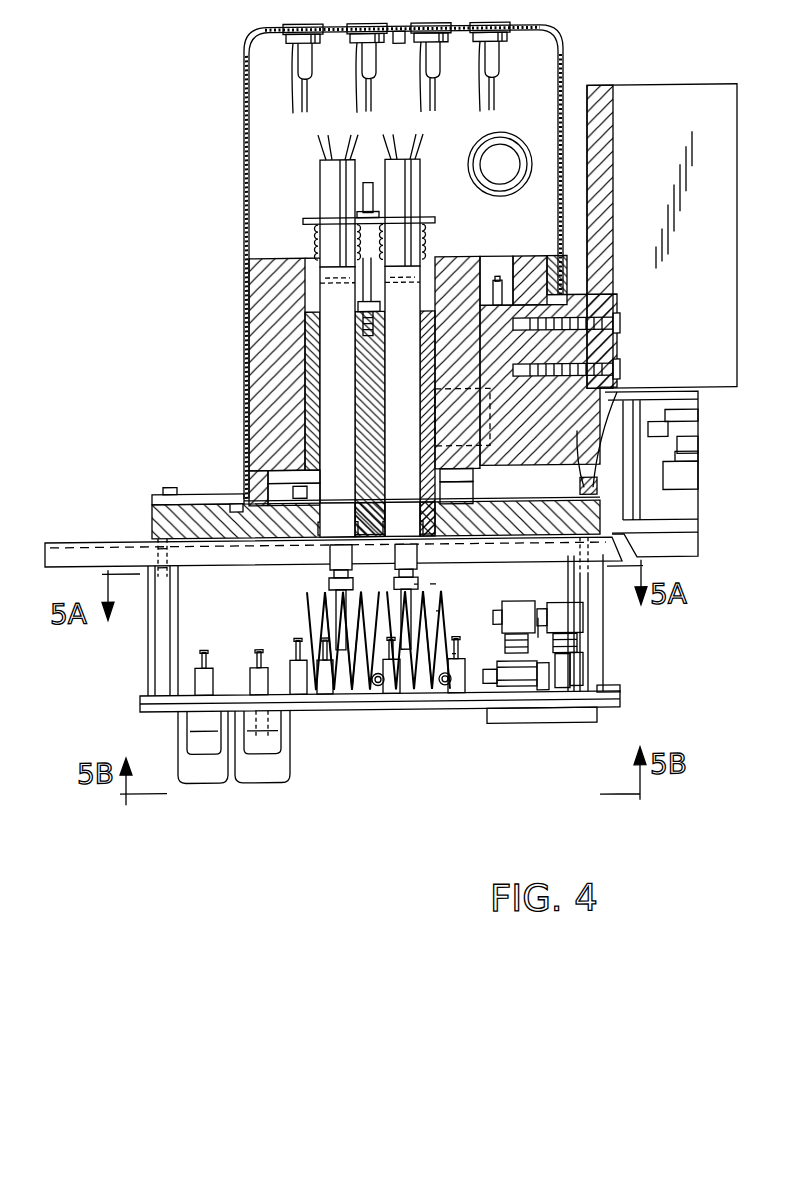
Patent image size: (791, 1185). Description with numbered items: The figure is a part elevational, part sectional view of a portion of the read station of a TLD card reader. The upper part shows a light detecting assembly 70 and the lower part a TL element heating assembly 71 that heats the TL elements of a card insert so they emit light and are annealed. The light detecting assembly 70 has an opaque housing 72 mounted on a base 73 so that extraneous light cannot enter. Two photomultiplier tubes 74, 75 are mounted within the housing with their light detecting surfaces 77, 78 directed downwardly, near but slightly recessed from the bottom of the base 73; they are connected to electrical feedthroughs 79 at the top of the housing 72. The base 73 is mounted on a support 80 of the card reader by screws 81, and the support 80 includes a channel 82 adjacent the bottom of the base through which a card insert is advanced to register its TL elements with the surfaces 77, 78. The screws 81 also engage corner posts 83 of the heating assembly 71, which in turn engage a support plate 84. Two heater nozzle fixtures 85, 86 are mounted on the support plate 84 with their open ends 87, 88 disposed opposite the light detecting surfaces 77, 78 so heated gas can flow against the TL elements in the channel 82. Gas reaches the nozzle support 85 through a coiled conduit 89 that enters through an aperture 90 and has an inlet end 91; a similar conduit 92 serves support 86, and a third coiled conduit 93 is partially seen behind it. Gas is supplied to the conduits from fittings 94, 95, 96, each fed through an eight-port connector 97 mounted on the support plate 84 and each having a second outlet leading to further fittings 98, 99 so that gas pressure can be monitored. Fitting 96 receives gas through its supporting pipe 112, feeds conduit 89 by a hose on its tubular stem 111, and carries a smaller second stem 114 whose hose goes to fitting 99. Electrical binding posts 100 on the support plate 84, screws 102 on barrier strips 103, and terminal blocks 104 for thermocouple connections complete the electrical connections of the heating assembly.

The light detecting assembly 70 is at (183, 200).
The TL element heating assembly 71 is at (108, 695).
The opaque housing 72 is at (241, 303).
The base 73 is at (163, 530).
The photomultiplier tube 74 is at (400, 183).
The photomultiplier tube 75 is at (331, 178).
The light detecting surface 77 is at (388, 521).
The light detecting surface 78 is at (323, 521).
The electrical feedthroughs 79 is at (305, 58).
The support 80 is at (58, 556).
The screws 81 is at (173, 491).
The channel 82 is at (226, 548).
The corner posts 83 is at (153, 640).
The support plate 84 is at (621, 697).
The heater nozzle fixture 85 is at (407, 693).
The heater nozzle fixture 86 is at (345, 692).
The end 87 is at (418, 560).
The end 88 is at (326, 562).
The coiled conduit 89 is at (436, 580).
The aperture 90 is at (393, 600).
The inlet end 91 is at (412, 692).
The conduit 92 is at (385, 693).
The coiled conduit 93 is at (313, 590).
The fitting 94 is at (495, 612).
The fitting 95 is at (523, 692).
The fitting 96 is at (581, 608).
The eight-port connector 97 is at (580, 725).
The fitting 98 is at (548, 693).
The fitting 99 is at (600, 692).
The electrical binding posts 100 is at (438, 612).
The screws 102 is at (223, 745).
The barrier strips 103 is at (260, 770).
The terminal blocks 104 is at (455, 655).
The tubular stem 111 is at (538, 620).
The supporting pipe 112 is at (576, 660).
The second stem 114 is at (582, 623).